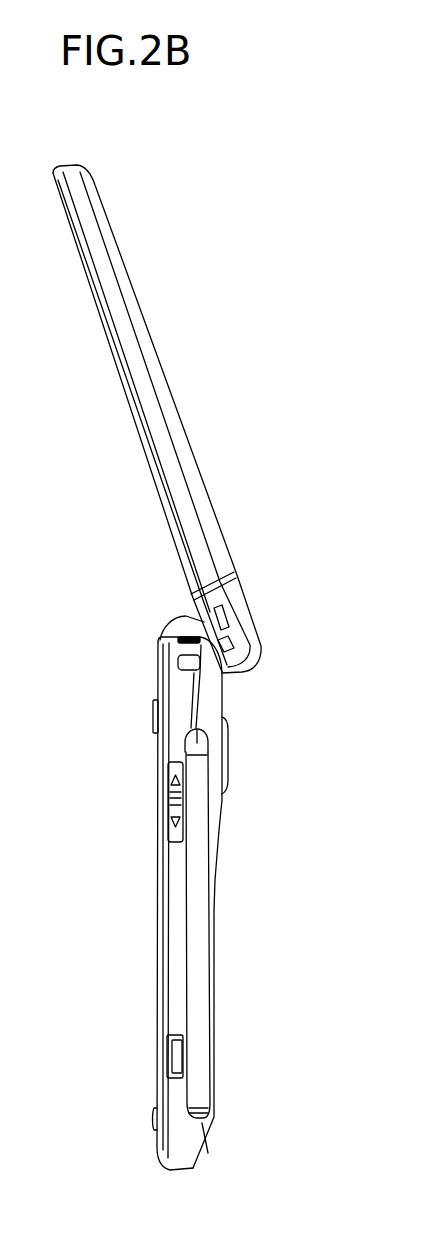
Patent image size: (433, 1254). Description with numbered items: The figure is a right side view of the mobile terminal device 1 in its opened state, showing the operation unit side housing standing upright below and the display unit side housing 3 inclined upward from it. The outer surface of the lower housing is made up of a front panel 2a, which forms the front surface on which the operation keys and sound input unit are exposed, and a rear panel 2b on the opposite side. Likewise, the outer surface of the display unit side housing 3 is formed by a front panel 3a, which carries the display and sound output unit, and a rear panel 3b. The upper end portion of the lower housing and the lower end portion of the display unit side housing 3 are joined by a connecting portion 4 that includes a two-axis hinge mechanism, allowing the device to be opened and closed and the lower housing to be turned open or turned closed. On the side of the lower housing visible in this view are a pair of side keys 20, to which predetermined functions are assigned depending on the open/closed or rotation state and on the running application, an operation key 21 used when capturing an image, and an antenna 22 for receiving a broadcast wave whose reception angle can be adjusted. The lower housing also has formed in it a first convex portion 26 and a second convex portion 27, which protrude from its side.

The mobile terminal device 1 is at (118, 172).
The front panel 2a is at (155, 713).
The rear panel 2b is at (223, 698).
The display unit side housing 3 is at (122, 441).
The front panel 3a is at (85, 279).
The rear panel 3b is at (113, 231).
The connecting portion 4 is at (181, 598).
The side keys 20 is at (153, 758).
The operation key 21 is at (172, 1059).
The antenna 22 is at (198, 942).
The first convex portion 26 is at (153, 1120).
The second convex portion 27 is at (152, 722).